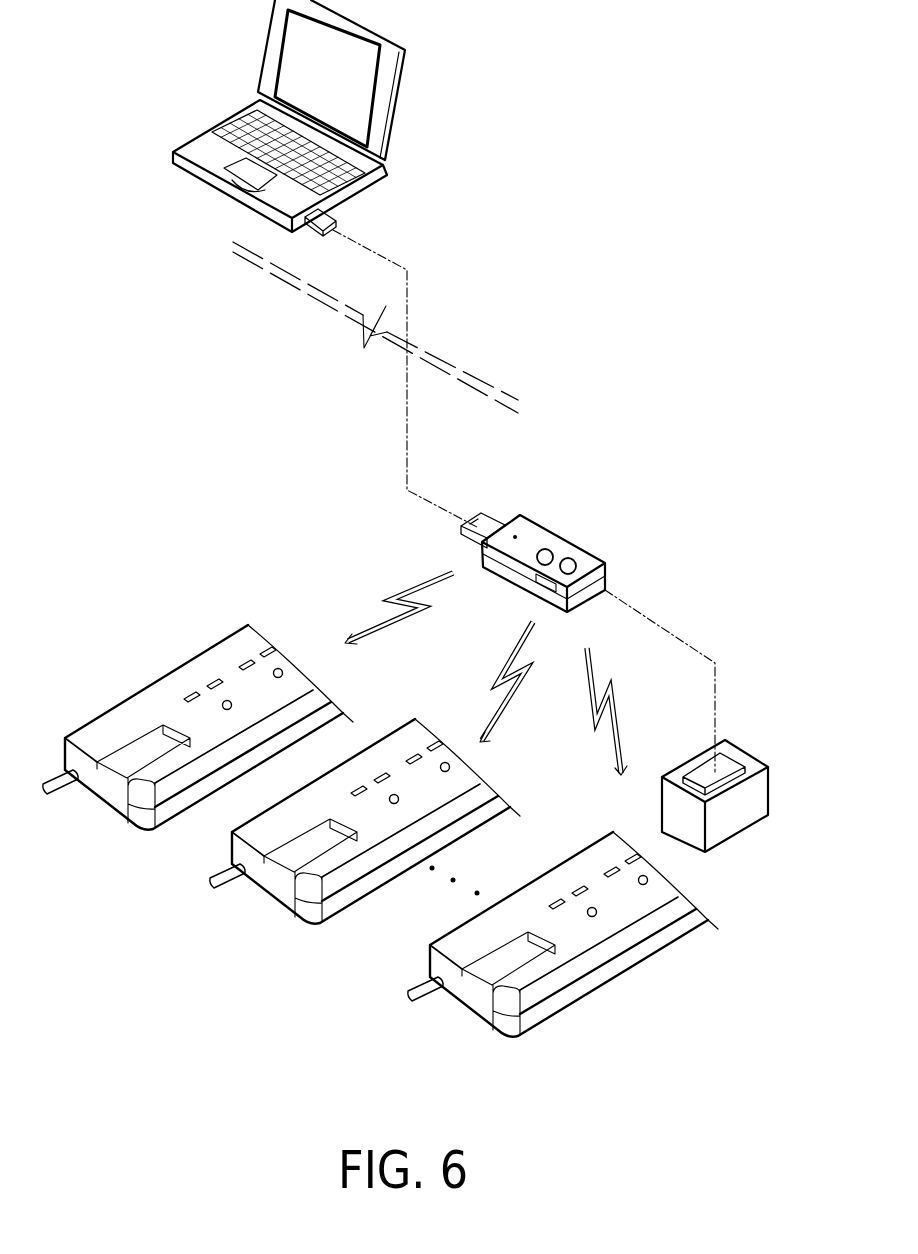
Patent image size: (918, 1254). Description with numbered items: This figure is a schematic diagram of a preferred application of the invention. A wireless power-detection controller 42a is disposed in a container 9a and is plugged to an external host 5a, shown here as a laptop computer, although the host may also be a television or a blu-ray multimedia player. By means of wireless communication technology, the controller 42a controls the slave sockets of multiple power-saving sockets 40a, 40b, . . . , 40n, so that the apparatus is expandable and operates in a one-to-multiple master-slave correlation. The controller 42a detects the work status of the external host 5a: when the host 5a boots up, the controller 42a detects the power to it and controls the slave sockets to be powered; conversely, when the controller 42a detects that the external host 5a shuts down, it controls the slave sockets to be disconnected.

The external host 5a is at (400, 78).
The wireless power-detection controller 42a is at (531, 520).
The container 9a is at (755, 755).
The power-saving socket 40a is at (92, 792).
The power-saving socket 40b is at (263, 888).
The power-saving socket 40n is at (462, 1000).